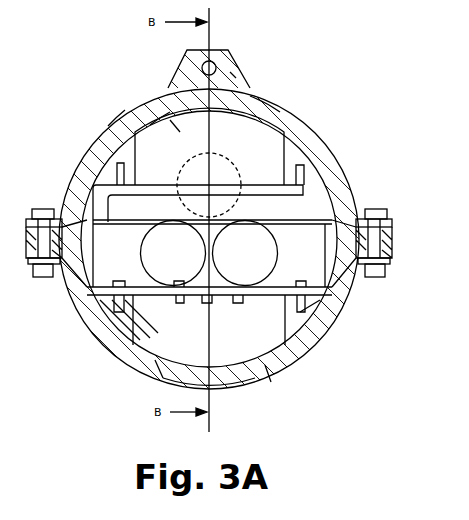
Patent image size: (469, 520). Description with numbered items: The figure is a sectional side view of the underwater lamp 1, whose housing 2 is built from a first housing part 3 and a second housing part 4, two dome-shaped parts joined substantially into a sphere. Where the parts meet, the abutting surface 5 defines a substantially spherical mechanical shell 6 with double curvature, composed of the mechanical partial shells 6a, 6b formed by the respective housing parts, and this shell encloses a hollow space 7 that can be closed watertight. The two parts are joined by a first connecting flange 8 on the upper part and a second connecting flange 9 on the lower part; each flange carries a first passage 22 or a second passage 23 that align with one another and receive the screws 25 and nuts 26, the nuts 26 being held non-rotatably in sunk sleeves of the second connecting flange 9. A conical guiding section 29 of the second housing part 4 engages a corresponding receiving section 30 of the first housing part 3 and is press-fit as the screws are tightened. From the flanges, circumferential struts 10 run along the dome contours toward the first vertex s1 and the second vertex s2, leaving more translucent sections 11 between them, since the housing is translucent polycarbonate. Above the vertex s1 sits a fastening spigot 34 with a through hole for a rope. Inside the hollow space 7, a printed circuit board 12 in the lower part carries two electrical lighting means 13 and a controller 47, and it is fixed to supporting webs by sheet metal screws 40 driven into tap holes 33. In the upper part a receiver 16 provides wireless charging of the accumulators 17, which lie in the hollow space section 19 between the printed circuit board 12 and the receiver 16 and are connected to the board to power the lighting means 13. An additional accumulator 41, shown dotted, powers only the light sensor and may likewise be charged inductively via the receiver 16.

The lamp 1 is at (303, 380).
The housing 2 is at (332, 203).
The first housing part 3 is at (118, 150).
The second housing part 4 is at (280, 372).
The abutting surface 5 is at (62, 222).
The mechanical shell 6 is at (300, 138).
The mechanical partial shell 6a is at (182, 172).
The mechanical partial shell 6b is at (340, 290).
The hollow space 7 is at (312, 338).
The first connecting flange 8 is at (392, 230).
The second connecting flange 9 is at (392, 256).
The circumferential struts 10 is at (272, 100).
The sections 11 is at (160, 128).
The printed circuit board 12 is at (174, 300).
The electrical lighting means 13 is at (165, 310).
The receiver 16 is at (305, 188).
The accumulators 17 is at (160, 279).
The hollow space section 19 is at (118, 262).
The first passage 22 is at (393, 240).
The second passage 23 is at (392, 251).
The screws 25 is at (388, 224).
The nuts 26 is at (386, 270).
The conical guiding section 29 is at (90, 188).
The receiving section 30 is at (372, 213).
The tap holes 33 is at (328, 318).
The fastening spigot 34 is at (230, 62).
The sheet metal screws 40 is at (152, 262).
The additional accumulator 41 is at (118, 124).
The controller 47 is at (251, 292).
The first vertex s1 is at (237, 76).
The second vertex s2 is at (290, 318).